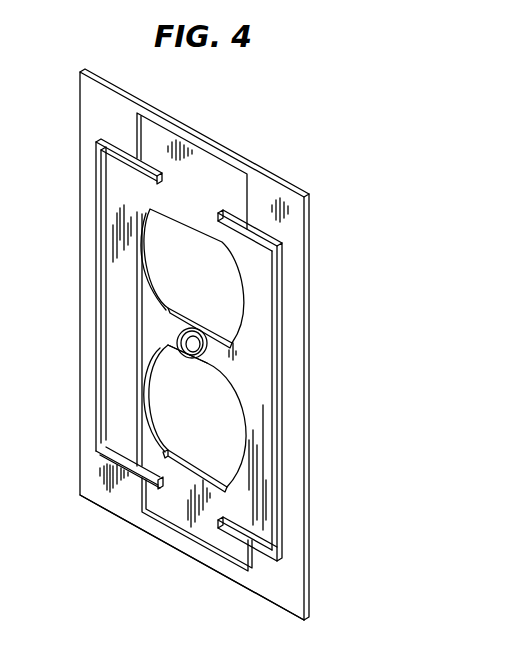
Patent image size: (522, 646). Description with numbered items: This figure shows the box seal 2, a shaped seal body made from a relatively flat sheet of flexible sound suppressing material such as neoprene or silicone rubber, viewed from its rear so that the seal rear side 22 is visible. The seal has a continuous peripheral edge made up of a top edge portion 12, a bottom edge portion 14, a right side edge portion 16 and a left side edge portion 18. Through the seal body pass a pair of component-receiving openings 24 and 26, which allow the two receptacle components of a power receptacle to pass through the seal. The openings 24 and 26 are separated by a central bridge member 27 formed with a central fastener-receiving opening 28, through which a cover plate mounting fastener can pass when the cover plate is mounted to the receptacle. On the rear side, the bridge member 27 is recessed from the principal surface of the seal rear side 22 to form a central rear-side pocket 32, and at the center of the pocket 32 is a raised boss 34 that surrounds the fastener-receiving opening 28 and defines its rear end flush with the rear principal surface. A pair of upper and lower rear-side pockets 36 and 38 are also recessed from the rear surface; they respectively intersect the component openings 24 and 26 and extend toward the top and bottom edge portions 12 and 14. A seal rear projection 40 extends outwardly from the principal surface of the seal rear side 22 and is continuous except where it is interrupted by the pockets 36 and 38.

The box seal 2 is at (316, 93).
The top edge portion 12 is at (188, 126).
The bottom edge portion 14 is at (262, 600).
The right side edge portion 16 is at (80, 233).
The left side edge portion 18 is at (305, 463).
The seal rear side 22 is at (290, 291).
The component-receiving opening 24 is at (148, 224).
The component-receiving opening 26 is at (236, 470).
The central bridge member 27 is at (198, 315).
The fastener-receiving opening 28 is at (188, 351).
The central rear-side pocket 32 is at (150, 308).
The raised boss 34 is at (204, 366).
The upper rear-side pocket 36 is at (217, 174).
The lower rear-side pocket 38 is at (171, 508).
The seal rear projection 40 is at (283, 360).